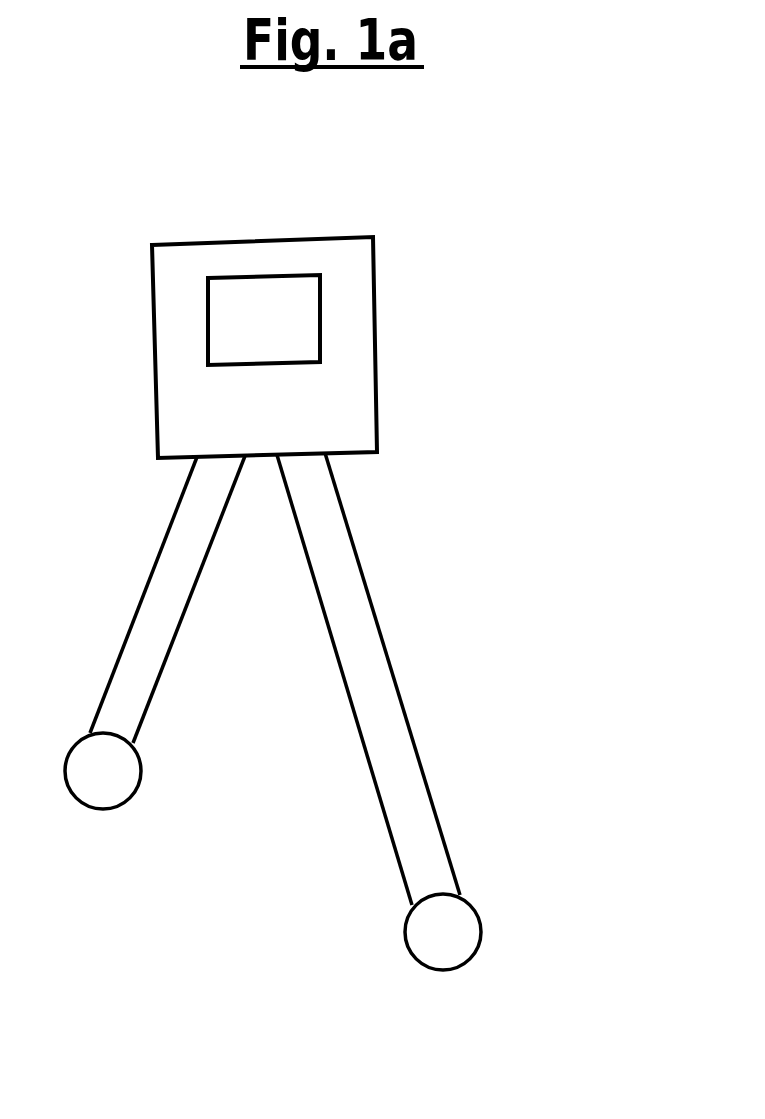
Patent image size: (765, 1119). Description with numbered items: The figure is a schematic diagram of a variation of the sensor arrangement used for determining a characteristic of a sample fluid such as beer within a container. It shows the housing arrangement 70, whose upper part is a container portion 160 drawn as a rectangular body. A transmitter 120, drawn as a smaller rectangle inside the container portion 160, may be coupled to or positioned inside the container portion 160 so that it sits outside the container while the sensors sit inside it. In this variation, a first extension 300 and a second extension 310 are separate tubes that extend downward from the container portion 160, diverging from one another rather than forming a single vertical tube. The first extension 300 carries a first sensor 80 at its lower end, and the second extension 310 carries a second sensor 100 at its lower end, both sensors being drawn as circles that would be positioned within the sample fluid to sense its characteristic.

The housing arrangement 70 is at (628, 471).
The first sensor 80 is at (102, 797).
The second sensor 100 is at (472, 933).
The transmitter 120 is at (258, 277).
The container portion 160 is at (376, 347).
The first extension 300 is at (157, 607).
The second extension 310 is at (387, 706).